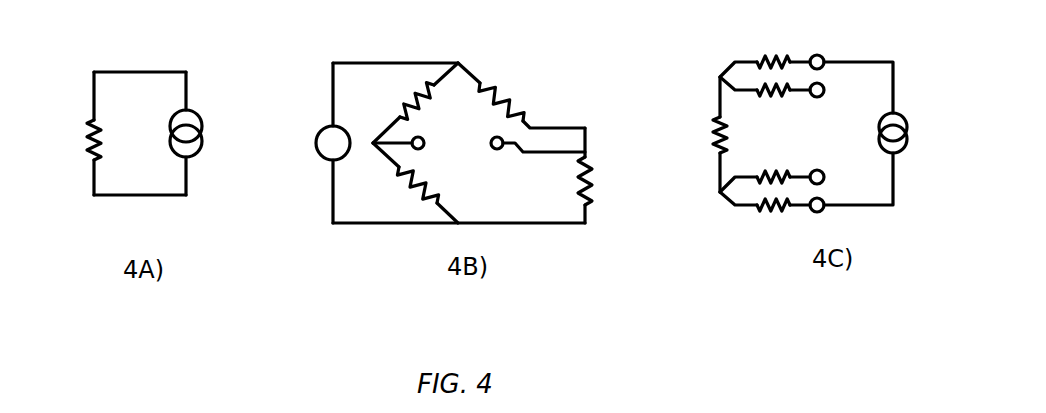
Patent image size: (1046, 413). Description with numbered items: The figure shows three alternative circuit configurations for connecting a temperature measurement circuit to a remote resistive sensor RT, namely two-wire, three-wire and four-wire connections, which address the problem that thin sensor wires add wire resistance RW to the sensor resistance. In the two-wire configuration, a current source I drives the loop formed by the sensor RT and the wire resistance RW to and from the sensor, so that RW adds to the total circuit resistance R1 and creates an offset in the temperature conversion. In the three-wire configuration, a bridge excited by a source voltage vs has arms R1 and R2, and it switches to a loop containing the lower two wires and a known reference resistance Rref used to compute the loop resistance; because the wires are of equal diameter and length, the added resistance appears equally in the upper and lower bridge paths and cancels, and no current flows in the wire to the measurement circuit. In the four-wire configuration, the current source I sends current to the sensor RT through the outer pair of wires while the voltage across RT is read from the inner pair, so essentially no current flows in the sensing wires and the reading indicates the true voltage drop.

In FIG. 4A, the wire resistance RW is at (140, 136).
In FIG. 4C, the wire resistance RW is at (772, 137).
In FIG. 4A, the resistive sensor RT is at (74, 133).
In FIG. 4B, the resistive sensor RT is at (602, 181).
In FIG. 4C, the resistive sensor RT is at (704, 134).
In FIG. 4B, the total circuit resistance R1 is at (415, 103).
In FIG. 4B, the bridge resistor R2 is at (415, 183).
In FIG. 4B, the reference resistor Rref is at (521, 95).
In FIG. 4B, the source voltage vs is at (320, 143).
In FIG. 4A, the current source I is at (207, 133).
In FIG. 4C, the current source I is at (891, 133).